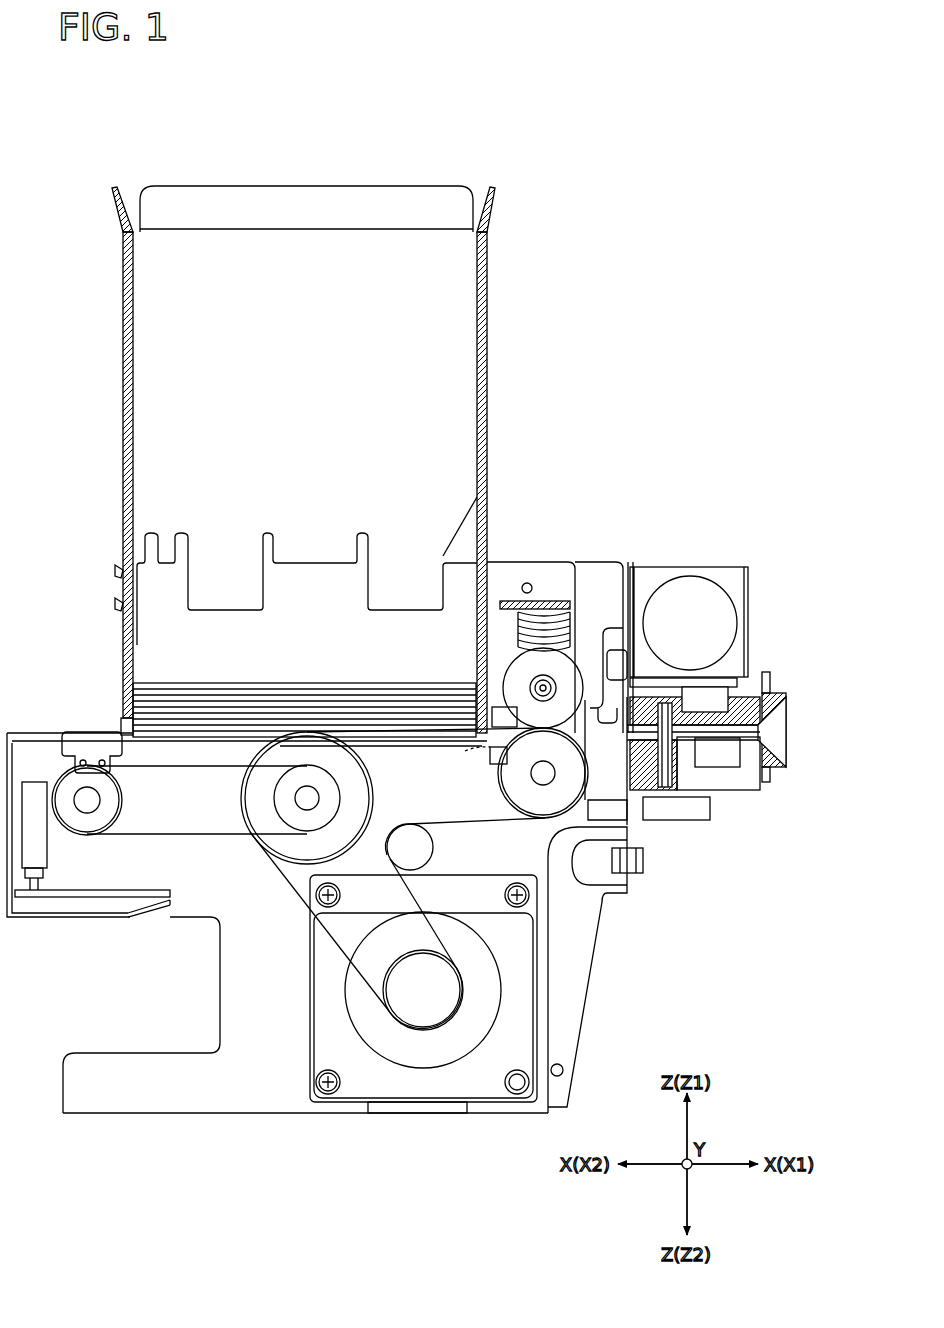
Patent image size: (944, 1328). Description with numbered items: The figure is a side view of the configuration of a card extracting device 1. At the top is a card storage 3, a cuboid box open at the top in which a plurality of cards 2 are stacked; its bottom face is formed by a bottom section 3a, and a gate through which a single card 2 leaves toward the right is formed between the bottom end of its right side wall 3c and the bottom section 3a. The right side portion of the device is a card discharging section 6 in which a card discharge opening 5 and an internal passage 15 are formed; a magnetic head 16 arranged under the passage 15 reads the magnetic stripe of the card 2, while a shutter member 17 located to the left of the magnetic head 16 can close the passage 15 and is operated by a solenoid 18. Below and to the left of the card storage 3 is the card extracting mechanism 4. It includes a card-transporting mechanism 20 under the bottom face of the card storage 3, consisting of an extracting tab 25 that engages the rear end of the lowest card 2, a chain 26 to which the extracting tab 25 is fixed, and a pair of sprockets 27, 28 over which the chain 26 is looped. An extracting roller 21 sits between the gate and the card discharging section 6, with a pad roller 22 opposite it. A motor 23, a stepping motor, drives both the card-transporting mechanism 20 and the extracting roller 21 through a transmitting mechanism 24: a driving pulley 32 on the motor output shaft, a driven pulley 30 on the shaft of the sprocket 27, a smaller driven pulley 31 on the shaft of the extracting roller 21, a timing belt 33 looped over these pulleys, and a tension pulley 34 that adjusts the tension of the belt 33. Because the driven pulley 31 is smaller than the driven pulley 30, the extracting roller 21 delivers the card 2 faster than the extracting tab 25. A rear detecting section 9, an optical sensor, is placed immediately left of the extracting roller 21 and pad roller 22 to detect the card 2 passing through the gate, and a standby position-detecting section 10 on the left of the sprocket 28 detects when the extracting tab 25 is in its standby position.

The card extracting device 1 is at (664, 216).
The card 2 is at (318, 683).
The card storage 3 is at (488, 374).
The bottom section 3a is at (390, 742).
The right side wall 3c is at (303, 461).
The card extracting mechanism 4 is at (572, 906).
The card discharge opening 5 is at (788, 728).
The card discharging section 6 is at (725, 567).
The rear detecting section 9 is at (500, 758).
The standby position-detecting section 10 is at (48, 856).
The passage 15 is at (697, 712).
The magnetic head 16 is at (728, 770).
The shutter member 17 is at (662, 786).
The solenoid 18 is at (665, 571).
The card-transporting mechanism 20 is at (203, 899).
The extracting roller 21 is at (522, 812).
The pad roller 22 is at (586, 698).
The motor 23 is at (310, 1035).
The transmitting mechanism 24 is at (287, 918).
The extracting tab 25 is at (75, 731).
The chain 26 is at (190, 834).
The sprocket 27 is at (262, 803).
The sprocket 28 is at (120, 800).
The driven pulley 30 is at (366, 810).
The driven pulley 31 is at (537, 815).
The driving pulley 32 is at (405, 950).
The belt 33 is at (270, 876).
The tension pulley 34 is at (434, 848).